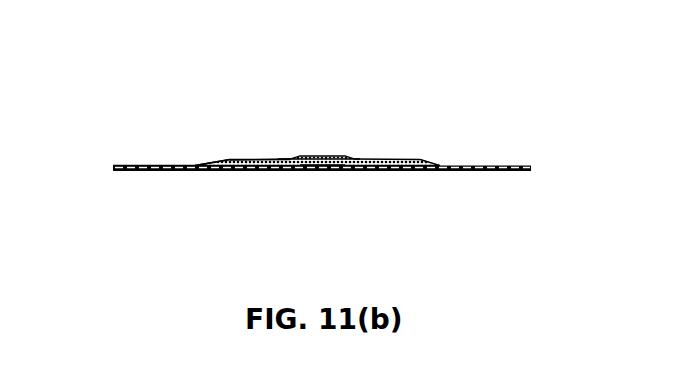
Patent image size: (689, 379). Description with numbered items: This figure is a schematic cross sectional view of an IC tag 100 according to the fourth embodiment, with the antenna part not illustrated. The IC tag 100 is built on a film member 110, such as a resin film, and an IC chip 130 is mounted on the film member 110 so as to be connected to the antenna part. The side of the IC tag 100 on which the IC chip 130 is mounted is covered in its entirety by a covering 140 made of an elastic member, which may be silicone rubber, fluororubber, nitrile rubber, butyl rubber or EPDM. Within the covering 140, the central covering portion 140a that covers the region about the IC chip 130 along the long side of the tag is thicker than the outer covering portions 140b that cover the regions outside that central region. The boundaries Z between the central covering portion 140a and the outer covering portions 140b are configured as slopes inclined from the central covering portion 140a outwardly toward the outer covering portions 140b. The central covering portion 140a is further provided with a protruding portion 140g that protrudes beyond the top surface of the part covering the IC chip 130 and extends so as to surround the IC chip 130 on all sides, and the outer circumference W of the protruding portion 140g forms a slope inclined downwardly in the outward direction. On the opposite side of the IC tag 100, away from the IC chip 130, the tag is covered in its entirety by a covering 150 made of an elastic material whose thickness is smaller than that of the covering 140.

The IC tag 100 is at (152, 117).
The film member 110 is at (452, 172).
The IC chip 130 is at (318, 172).
The covering 140 is at (397, 172).
The central covering portion 140a is at (257, 172).
The outer covering portions 140b is at (143, 172).
The protruding portion 140g is at (298, 158).
The covering 150 is at (496, 172).
The boundaries Z is at (219, 159).
The outer circumference W is at (278, 158).